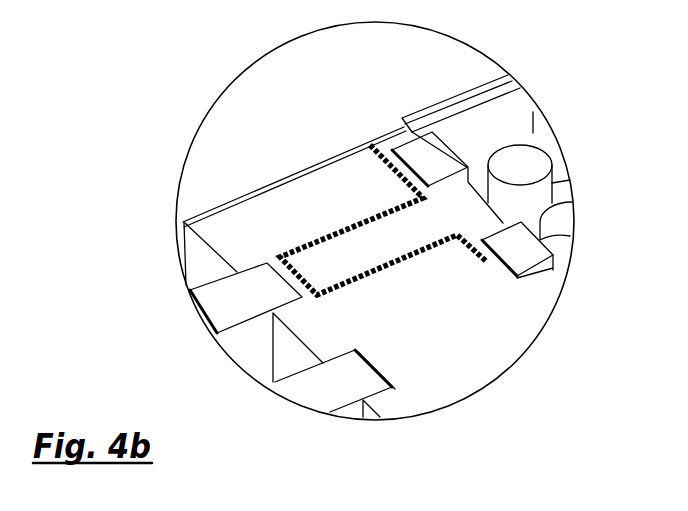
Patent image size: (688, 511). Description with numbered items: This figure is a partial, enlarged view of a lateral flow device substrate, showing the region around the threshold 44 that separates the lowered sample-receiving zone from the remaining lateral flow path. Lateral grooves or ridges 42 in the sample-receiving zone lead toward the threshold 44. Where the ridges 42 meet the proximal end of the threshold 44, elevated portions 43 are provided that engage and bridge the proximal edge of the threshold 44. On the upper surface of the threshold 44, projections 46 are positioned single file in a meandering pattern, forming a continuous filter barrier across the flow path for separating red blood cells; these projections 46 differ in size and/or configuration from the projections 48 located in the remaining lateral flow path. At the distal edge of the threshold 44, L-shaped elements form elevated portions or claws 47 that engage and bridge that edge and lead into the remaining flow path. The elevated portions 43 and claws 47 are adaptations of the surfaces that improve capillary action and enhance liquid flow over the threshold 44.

The lateral grooves or ridges 42 is at (230, 312).
The elevated portions 43 is at (380, 365).
The threshold 44 is at (459, 331).
The projections 46 is at (298, 243).
The claws 47 is at (520, 262).
The projections 48 is at (520, 157).